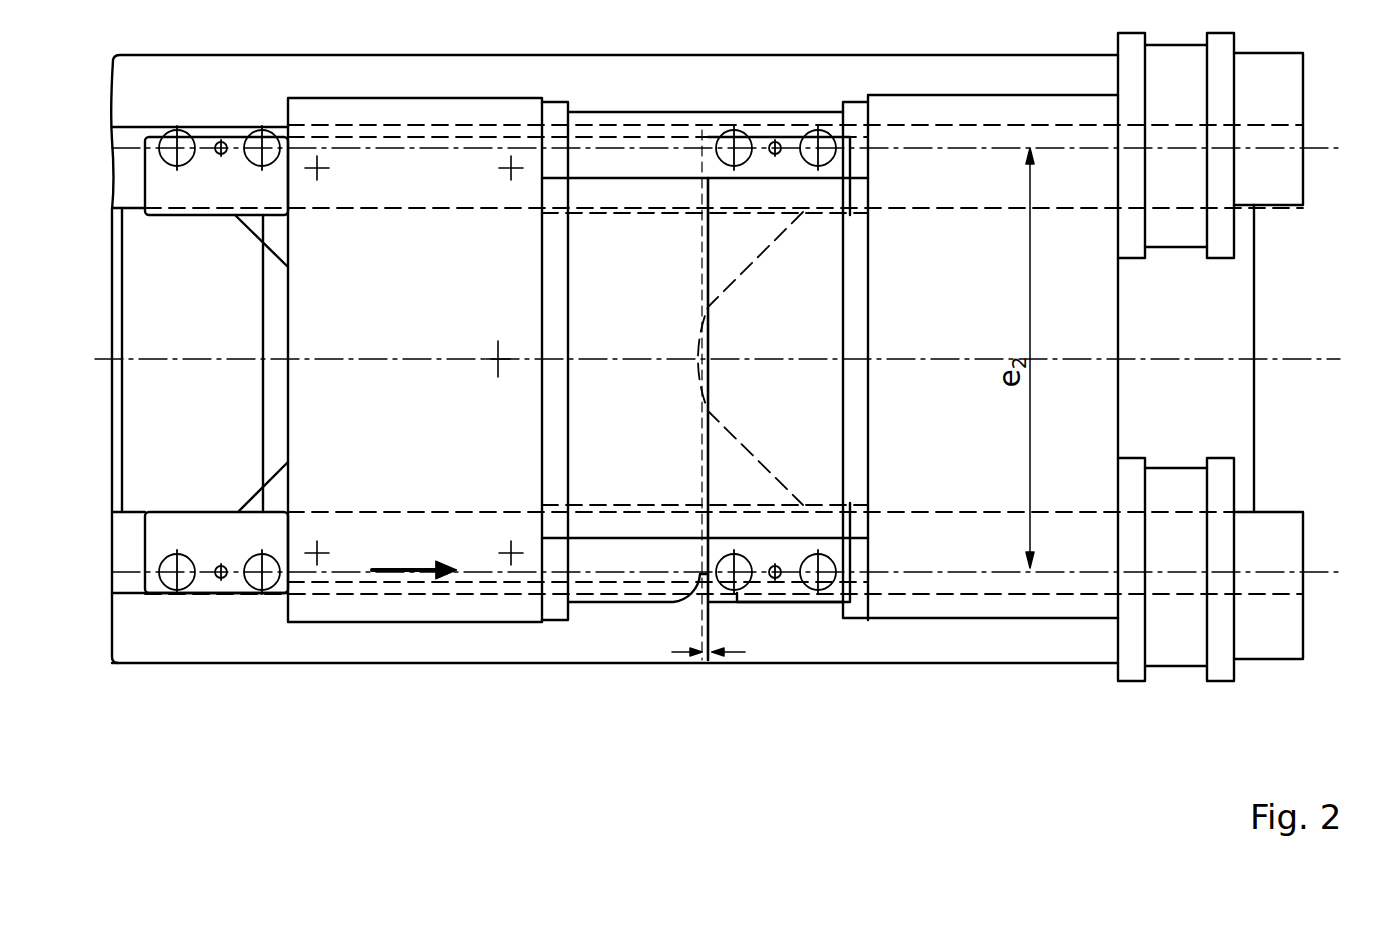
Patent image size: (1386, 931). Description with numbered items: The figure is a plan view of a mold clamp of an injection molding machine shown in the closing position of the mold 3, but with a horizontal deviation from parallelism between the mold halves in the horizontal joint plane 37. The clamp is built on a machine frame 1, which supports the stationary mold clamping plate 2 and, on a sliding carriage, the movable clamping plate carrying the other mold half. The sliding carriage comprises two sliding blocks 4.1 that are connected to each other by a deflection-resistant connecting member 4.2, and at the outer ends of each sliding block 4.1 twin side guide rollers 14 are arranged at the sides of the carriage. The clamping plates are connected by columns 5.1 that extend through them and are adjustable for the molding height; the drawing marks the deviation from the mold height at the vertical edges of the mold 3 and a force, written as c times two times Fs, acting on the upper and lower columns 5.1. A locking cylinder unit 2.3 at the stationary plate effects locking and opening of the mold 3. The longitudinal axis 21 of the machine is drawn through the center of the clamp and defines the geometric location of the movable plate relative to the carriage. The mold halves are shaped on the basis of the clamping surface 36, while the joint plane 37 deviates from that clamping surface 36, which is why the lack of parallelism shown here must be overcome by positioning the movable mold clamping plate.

The machine frame 1 is at (1058, 664).
The stationary mold clamping plate 2 is at (1206, 407).
The locking cylinder unit 2.3 is at (1222, 664).
The mold 3 is at (600, 420).
The sliding blocks 4.1 is at (155, 593).
The connecting member 4.2 is at (275, 490).
The columns 5.1 is at (615, 602).
The twin side guide rollers 14 is at (182, 590).
The longitudinal axis 21 is at (1275, 357).
The clamping surface 36 is at (543, 490).
The joint plane 37 is at (708, 420).